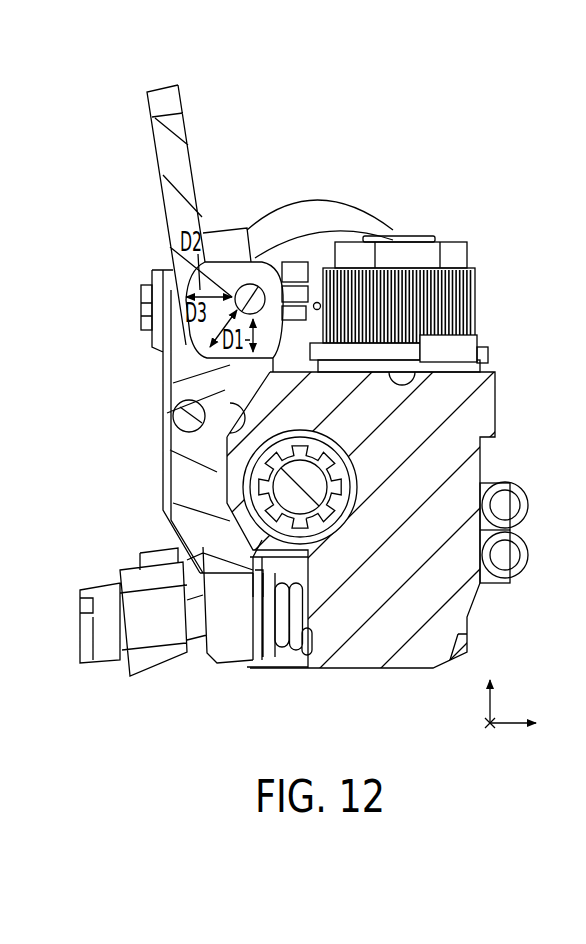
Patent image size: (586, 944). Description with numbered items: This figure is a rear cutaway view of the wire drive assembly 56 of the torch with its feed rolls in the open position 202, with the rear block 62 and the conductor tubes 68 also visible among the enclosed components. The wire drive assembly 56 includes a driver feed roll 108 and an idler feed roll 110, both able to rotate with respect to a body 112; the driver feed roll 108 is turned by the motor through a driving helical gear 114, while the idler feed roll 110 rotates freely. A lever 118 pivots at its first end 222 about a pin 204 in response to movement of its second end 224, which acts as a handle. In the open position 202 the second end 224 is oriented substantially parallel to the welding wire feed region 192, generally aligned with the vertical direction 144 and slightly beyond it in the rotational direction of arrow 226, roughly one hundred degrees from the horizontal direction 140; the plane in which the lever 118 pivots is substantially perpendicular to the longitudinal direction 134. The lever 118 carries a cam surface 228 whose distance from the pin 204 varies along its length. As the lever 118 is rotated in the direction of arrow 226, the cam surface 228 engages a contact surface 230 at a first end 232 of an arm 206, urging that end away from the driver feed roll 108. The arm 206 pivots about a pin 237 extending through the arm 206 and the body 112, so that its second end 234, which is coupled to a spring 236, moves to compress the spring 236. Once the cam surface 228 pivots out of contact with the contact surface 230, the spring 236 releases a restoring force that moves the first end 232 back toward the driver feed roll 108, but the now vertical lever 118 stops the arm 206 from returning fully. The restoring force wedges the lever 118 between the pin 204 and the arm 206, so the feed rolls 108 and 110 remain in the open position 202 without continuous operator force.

The wire drive assembly 56 is at (500, 258).
The rear block 62 is at (388, 234).
The conductor tubes 68 is at (527, 495).
The driver feed roll 108 is at (475, 298).
The idler feed roll 110 is at (145, 285).
The body 112 is at (468, 472).
The driving helical gear 114 is at (320, 522).
The lever 118 is at (160, 148).
The longitudinal direction 134 is at (488, 724).
The horizontal direction 140 is at (498, 724).
The vertical direction 144 is at (492, 720).
The welding wire feed region 192 is at (313, 262).
The open position 202 is at (128, 338).
The pin 204 is at (152, 292).
The arm 206 is at (178, 497).
The first end 222 is at (289, 352).
The second end 224 is at (189, 93).
The arrow 226 is at (226, 160).
The cam surface 228 is at (208, 290).
The contact surface 230 is at (230, 318).
The first end 232 is at (160, 257).
The second end 234 is at (222, 673).
The spring 236 is at (290, 648).
The pin 237 is at (180, 414).